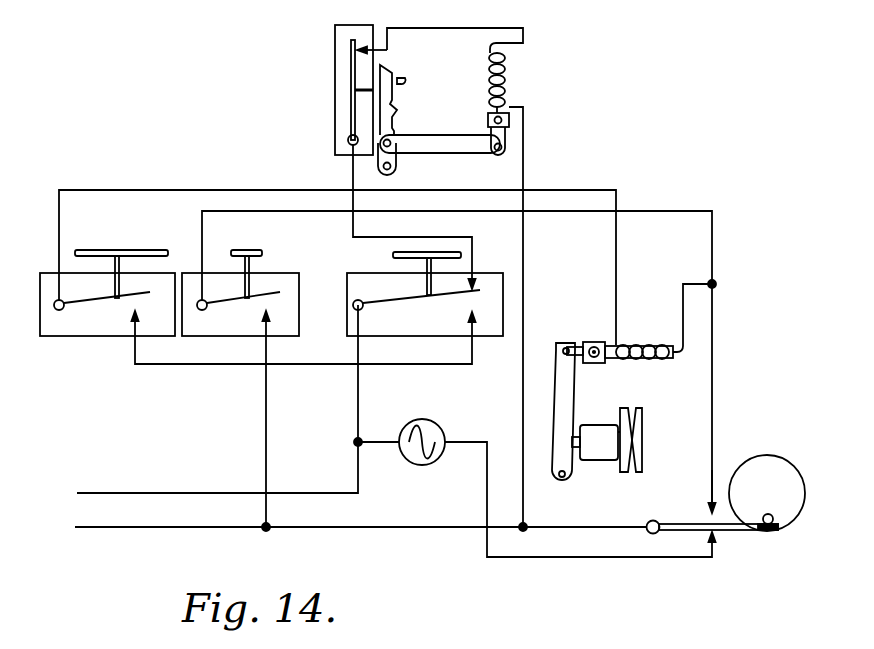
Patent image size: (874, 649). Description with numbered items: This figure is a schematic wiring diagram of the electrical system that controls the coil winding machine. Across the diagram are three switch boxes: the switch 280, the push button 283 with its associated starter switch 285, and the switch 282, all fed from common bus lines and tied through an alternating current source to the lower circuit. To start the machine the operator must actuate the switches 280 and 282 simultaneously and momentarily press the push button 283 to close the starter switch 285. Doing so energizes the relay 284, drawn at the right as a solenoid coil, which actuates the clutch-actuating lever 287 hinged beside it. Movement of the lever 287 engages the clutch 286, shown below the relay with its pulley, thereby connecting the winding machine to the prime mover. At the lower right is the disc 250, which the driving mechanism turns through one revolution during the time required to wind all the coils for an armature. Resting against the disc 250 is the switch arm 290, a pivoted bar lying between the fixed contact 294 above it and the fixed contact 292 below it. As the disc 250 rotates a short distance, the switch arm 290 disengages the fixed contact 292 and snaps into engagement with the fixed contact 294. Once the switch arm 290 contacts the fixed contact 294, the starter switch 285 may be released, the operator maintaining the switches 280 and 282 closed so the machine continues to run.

The switch 280 is at (94, 249).
The push button 283 is at (247, 249).
The starter switch 285 is at (256, 305).
The switch 282 is at (393, 255).
The relay 284 is at (648, 345).
The clutch-actuating lever 287 is at (567, 382).
The clutch 286 is at (595, 432).
The fixed contact 294 is at (712, 502).
The fixed contact 292 is at (712, 541).
The switch arm 290 is at (730, 532).
The disc 250 is at (793, 525).